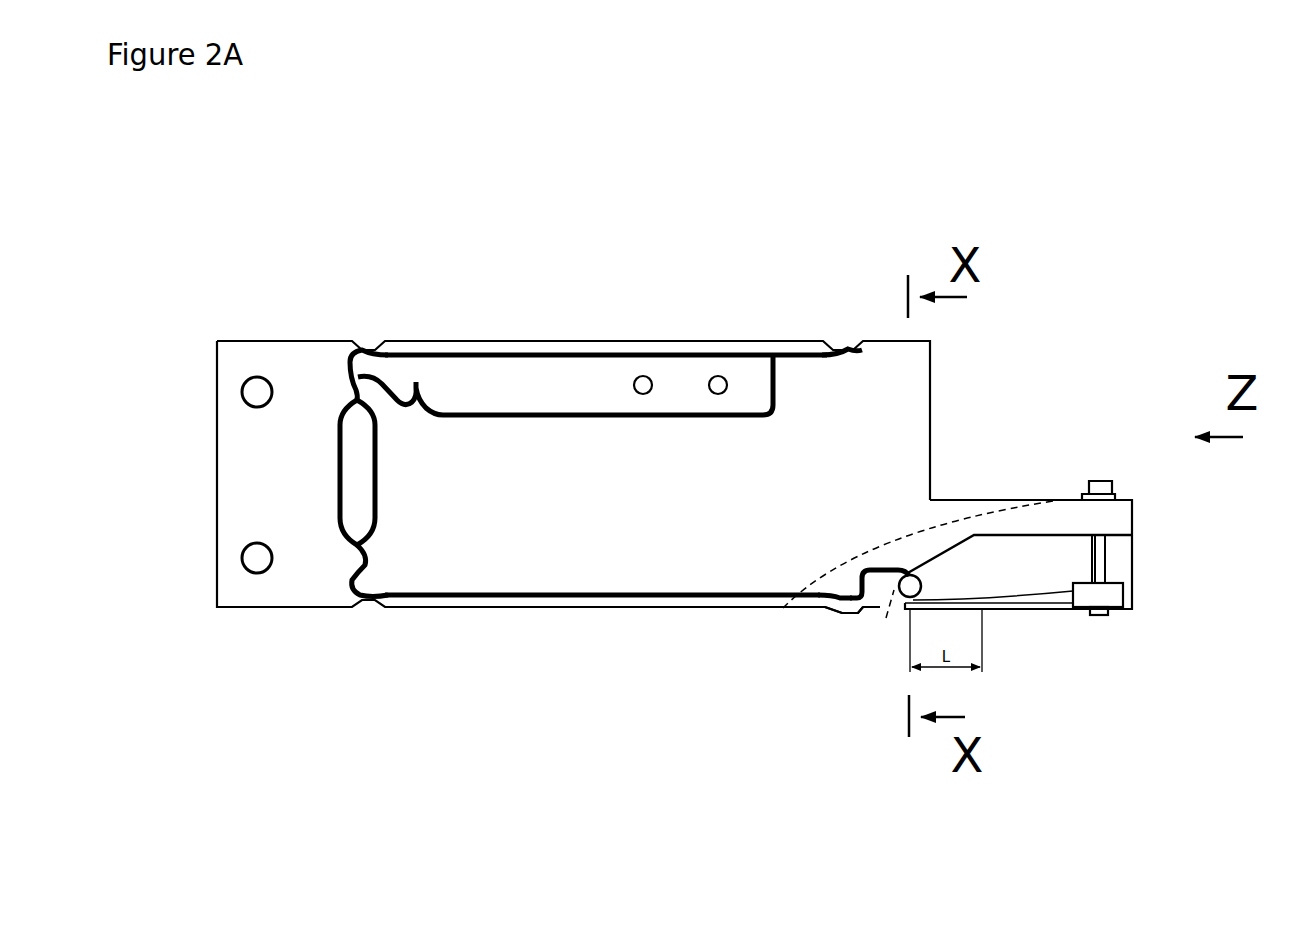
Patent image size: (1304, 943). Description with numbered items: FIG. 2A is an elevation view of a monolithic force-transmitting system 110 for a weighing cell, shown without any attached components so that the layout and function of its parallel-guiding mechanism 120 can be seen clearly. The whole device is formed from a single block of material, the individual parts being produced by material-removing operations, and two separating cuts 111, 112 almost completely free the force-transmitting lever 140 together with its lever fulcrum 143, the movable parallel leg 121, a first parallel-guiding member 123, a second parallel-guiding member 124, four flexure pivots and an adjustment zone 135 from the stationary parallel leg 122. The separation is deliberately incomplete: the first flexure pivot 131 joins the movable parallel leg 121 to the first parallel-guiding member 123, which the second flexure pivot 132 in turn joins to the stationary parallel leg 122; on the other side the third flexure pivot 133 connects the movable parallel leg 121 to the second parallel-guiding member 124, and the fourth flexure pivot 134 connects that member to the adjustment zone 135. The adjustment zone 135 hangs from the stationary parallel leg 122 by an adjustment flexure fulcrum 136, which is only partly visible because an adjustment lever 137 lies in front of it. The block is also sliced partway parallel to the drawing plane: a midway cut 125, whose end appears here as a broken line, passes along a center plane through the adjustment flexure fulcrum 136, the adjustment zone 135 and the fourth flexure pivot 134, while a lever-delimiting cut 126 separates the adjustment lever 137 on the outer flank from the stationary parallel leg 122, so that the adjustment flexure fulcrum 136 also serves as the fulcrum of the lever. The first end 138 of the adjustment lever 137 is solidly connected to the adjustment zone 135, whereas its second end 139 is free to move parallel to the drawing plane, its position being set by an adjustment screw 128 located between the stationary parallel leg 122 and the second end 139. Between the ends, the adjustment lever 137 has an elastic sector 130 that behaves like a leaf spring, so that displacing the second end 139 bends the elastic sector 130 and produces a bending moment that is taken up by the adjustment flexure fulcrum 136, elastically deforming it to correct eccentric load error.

The force-transmitting system 110 is at (236, 295).
The separating cut 111 is at (338, 488).
The separating cut 112 is at (478, 596).
The parallel-guiding mechanism 120 is at (661, 648).
The movable parallel leg 121 is at (282, 468).
The stationary parallel leg 122 is at (623, 503).
The first parallel-guiding member 123 is at (610, 352).
The second parallel-guiding member 124 is at (585, 600).
The midway cut 125 is at (920, 387).
The lever-delimiting cut 126 is at (853, 724).
The adjustment screw 128 is at (1100, 553).
The elastic sector 130 is at (1028, 382).
The first flexure pivot 131 is at (365, 346).
The second flexure pivot 132 is at (842, 350).
The third flexure pivot 133 is at (365, 600).
The fourth flexure pivot 134 is at (778, 730).
The adjustment zone 135 is at (837, 711).
The adjustment flexure fulcrum 136 is at (989, 376).
The adjustment lever 137 is at (1045, 607).
The first end 138 is at (893, 624).
The second end 139 is at (1097, 597).
The force-transmitting lever 140 is at (683, 388).
The lever fulcrum 143 is at (418, 382).